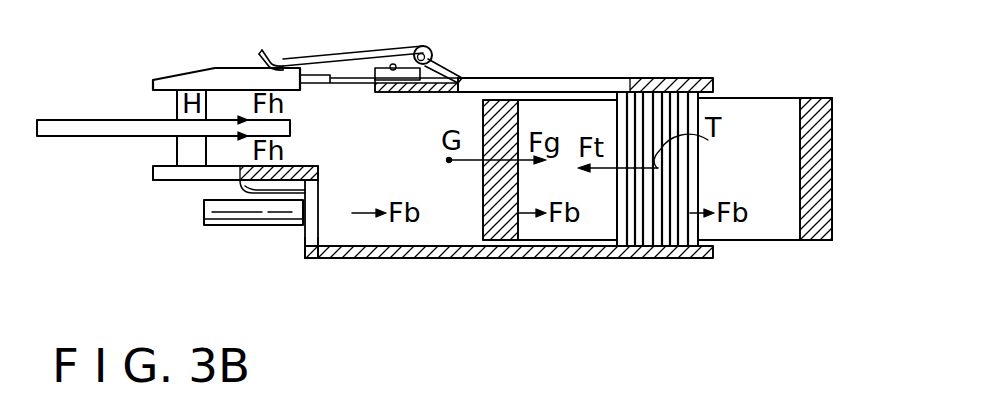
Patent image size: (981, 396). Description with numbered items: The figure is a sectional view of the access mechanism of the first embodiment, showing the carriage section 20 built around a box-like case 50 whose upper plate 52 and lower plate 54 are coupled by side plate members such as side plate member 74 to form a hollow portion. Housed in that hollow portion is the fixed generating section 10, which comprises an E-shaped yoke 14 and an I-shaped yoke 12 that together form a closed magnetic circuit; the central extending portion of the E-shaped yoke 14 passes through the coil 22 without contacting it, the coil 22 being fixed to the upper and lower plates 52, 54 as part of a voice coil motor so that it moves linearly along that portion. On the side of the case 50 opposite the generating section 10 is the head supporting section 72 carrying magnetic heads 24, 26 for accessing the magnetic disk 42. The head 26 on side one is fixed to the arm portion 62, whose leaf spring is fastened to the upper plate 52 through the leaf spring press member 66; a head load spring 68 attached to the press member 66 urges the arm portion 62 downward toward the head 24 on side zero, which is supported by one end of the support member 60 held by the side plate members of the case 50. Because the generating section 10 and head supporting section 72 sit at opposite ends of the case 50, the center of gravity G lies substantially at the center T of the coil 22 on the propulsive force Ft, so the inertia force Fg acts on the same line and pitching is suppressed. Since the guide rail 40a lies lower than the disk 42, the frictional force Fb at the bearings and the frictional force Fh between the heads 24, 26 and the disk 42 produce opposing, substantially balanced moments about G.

The generating section 10 is at (886, 245).
The I-shaped yoke 12 is at (832, 160).
The E-shaped yoke 14 is at (766, 228).
The carriage section 20 is at (227, 238).
The coil 22 is at (699, 168).
The magnetic head 24 is at (175, 155).
The magnetic head 26 is at (175, 105).
The guide rail 40a is at (266, 232).
The magnetic disk 42 is at (70, 137).
The case 50 is at (582, 262).
The upper plate 52 is at (660, 78).
The lower plate 54 is at (448, 260).
The support member 60 is at (305, 188).
The arm portion 62 is at (232, 78).
The leaf spring press member 66 is at (380, 57).
The head load spring 68 is at (327, 54).
The head supporting section 72 is at (201, 183).
The side plate member 74 is at (313, 246).